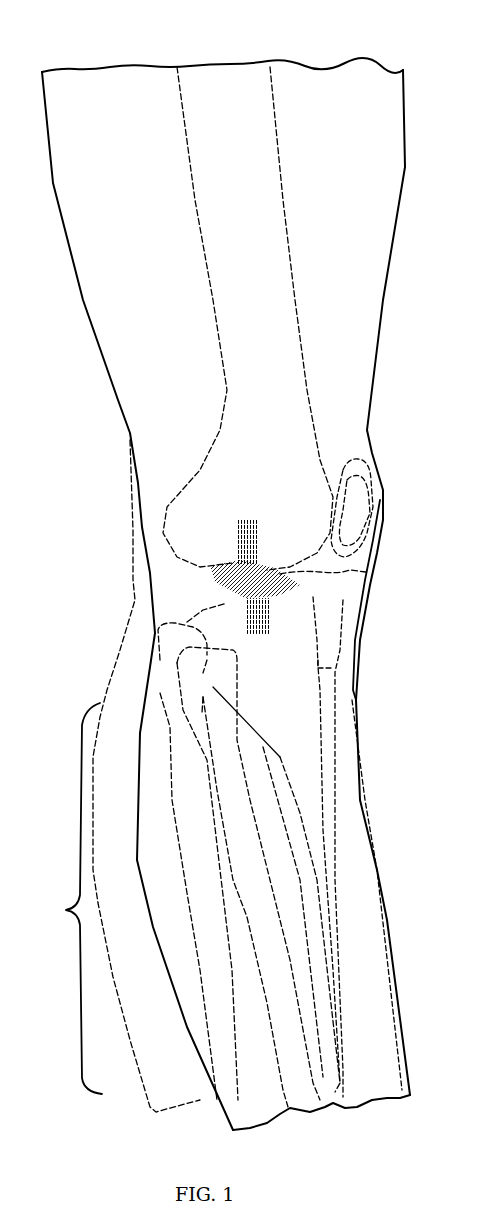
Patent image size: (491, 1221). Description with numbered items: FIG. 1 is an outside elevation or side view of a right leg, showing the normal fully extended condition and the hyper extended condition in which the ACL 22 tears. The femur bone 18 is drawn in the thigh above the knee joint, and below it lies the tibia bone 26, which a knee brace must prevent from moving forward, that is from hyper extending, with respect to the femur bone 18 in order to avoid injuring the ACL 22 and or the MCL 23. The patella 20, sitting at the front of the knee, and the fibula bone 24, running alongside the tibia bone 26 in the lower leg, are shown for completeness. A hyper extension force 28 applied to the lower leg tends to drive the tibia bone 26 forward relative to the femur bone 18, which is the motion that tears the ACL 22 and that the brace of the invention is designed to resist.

The femur bone 18 is at (230, 70).
The patella 20 is at (373, 507).
The ACL 22 is at (372, 573).
The MCL 23 is at (243, 573).
The fibula bone 24 is at (220, 876).
The tibia bone 26 is at (350, 677).
The hyper extension force 28 is at (63, 898).